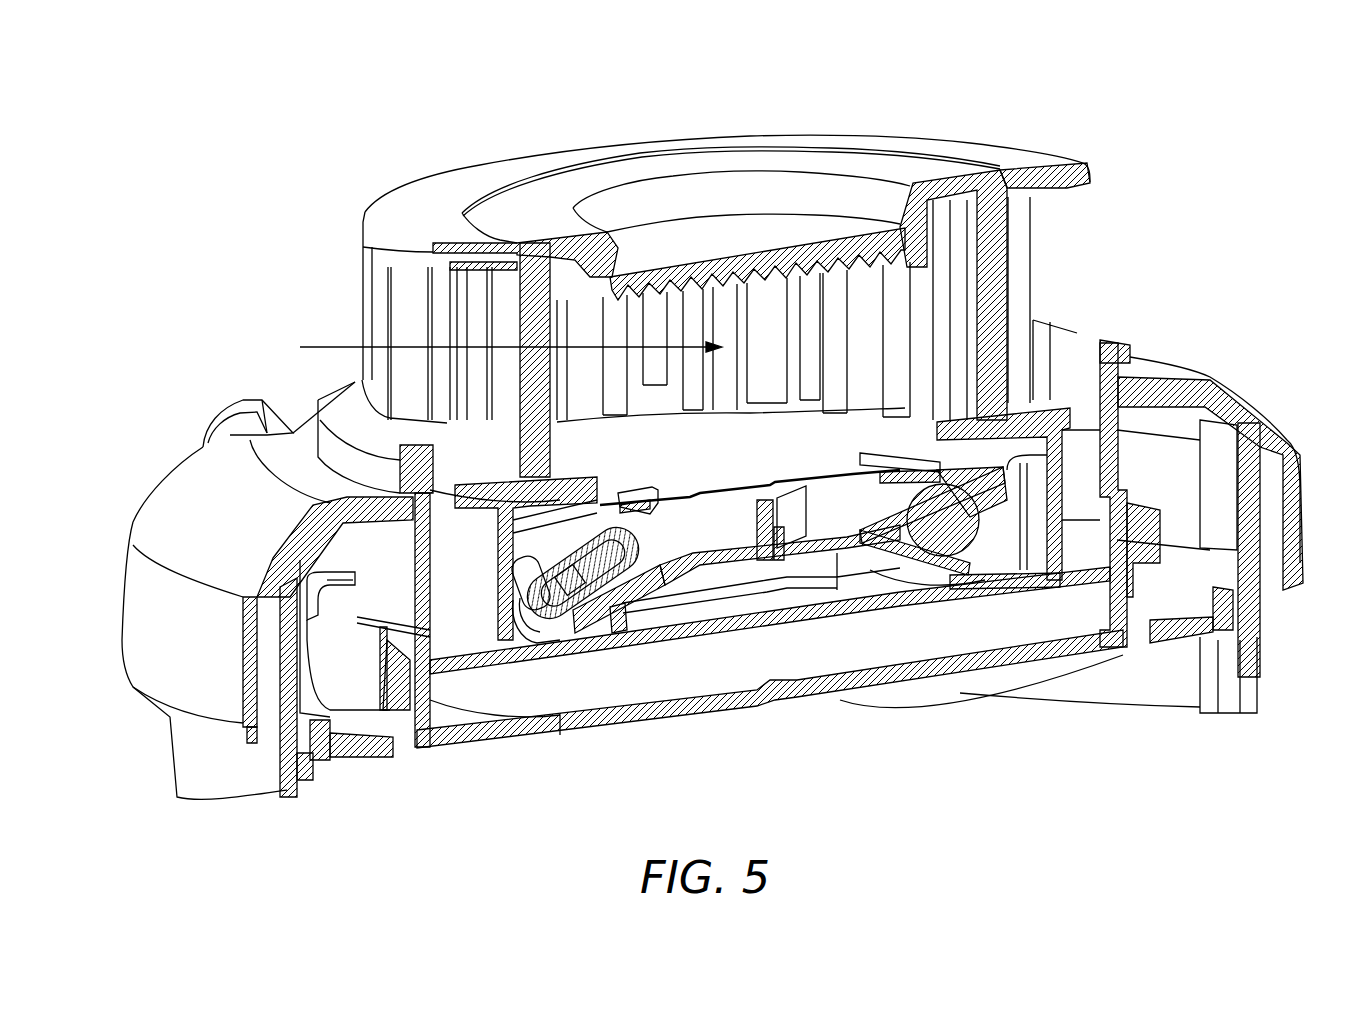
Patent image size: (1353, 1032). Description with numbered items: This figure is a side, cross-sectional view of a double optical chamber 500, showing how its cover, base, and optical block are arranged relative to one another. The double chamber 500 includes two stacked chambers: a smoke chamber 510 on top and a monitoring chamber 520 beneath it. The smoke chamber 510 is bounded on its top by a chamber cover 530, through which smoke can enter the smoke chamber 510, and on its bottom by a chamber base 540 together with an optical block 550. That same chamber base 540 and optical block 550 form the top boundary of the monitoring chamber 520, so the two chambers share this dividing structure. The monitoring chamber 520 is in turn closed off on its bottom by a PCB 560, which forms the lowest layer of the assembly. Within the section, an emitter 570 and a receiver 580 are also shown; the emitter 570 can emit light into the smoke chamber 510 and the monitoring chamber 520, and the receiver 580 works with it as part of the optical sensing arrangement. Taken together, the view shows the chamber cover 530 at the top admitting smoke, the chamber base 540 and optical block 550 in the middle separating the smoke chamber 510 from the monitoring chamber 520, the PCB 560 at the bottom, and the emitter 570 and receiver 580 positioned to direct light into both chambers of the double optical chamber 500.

The double optical chamber 500 is at (1138, 137).
The smoke chamber 510 is at (806, 343).
The monitoring chamber 520 is at (827, 583).
The chamber cover 530 is at (795, 230).
The chamber base 540 is at (1007, 417).
The optical block 550 is at (707, 560).
The PCB 560 is at (1083, 653).
The emitter 570 is at (560, 557).
The receiver 580 is at (932, 510).